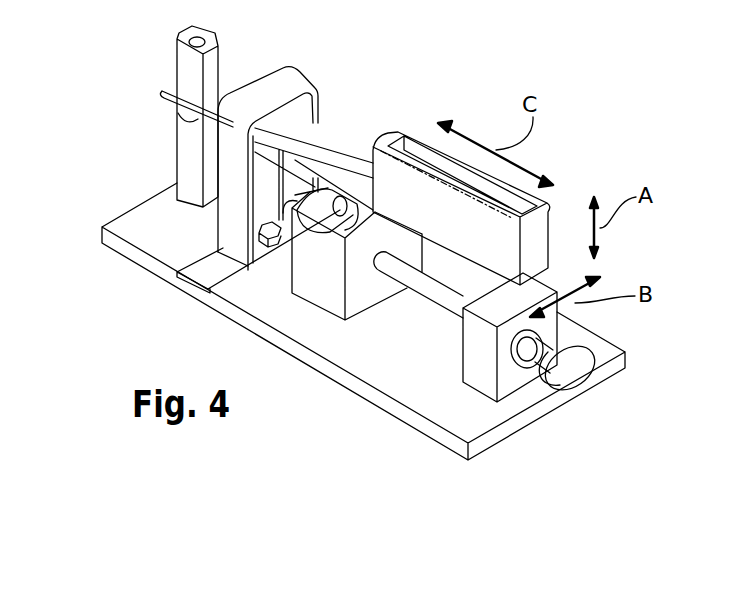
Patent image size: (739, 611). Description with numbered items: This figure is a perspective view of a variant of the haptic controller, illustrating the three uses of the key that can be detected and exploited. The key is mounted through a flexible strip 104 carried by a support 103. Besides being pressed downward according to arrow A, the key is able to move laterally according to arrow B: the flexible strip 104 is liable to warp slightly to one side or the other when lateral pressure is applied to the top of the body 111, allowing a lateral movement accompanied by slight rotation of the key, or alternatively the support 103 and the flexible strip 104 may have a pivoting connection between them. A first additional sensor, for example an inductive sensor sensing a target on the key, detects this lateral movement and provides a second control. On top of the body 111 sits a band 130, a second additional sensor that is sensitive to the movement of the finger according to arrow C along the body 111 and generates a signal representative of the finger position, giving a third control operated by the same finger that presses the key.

The support 103 is at (192, 150).
The flexible strip 104 is at (173, 125).
The body 111 is at (372, 165).
The band 130 is at (418, 155).